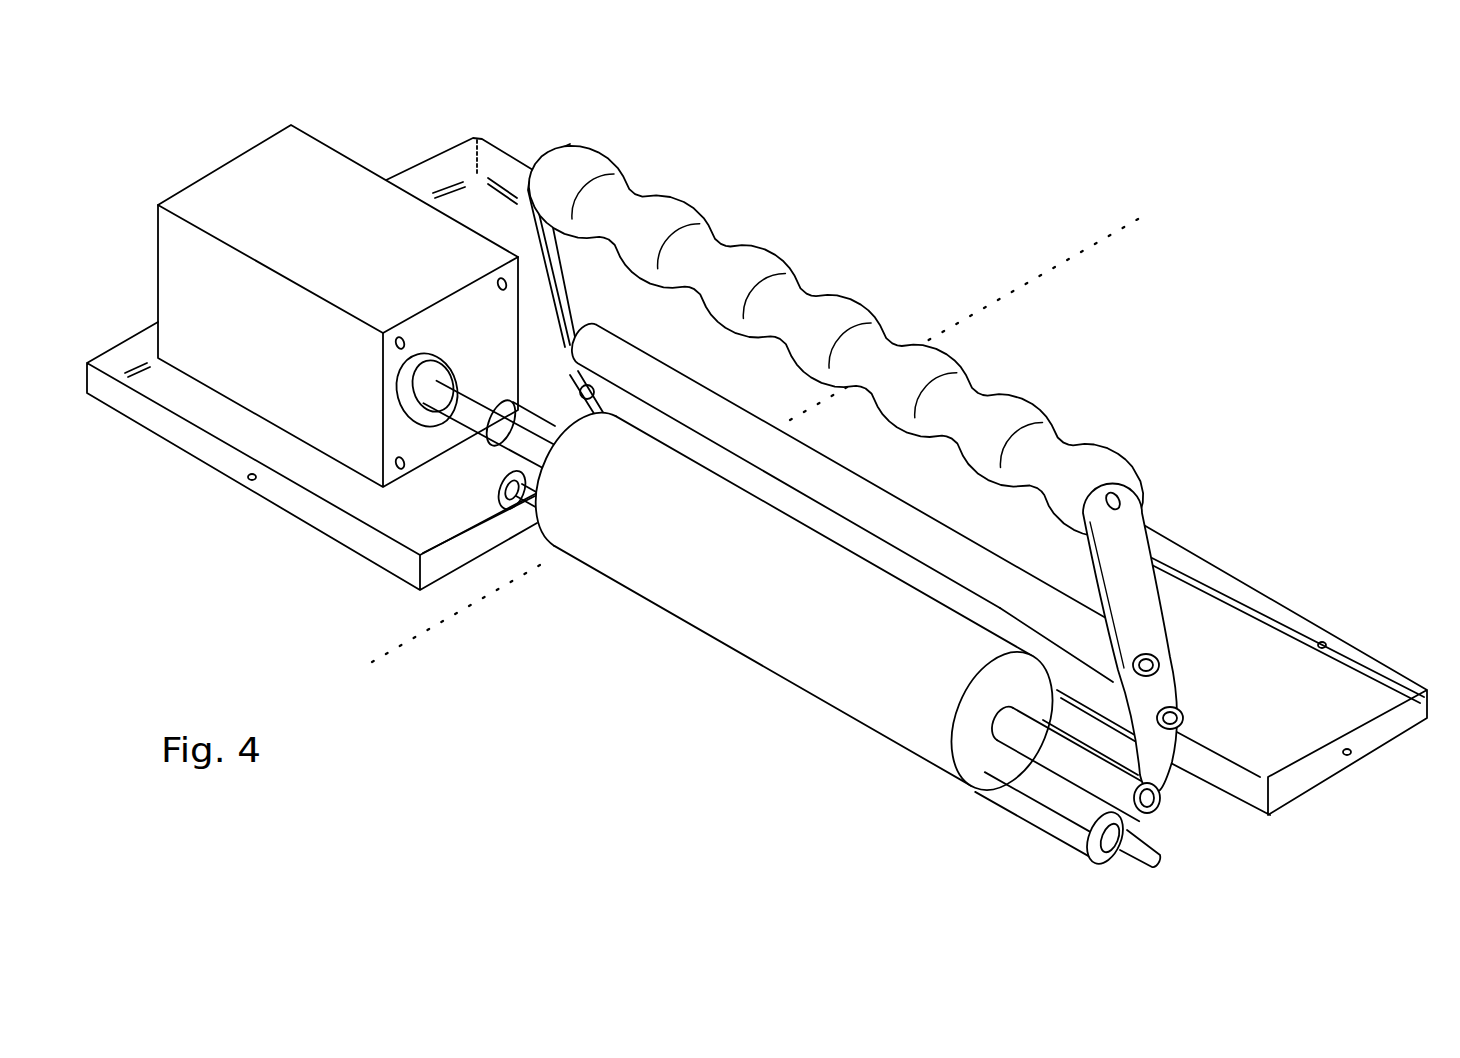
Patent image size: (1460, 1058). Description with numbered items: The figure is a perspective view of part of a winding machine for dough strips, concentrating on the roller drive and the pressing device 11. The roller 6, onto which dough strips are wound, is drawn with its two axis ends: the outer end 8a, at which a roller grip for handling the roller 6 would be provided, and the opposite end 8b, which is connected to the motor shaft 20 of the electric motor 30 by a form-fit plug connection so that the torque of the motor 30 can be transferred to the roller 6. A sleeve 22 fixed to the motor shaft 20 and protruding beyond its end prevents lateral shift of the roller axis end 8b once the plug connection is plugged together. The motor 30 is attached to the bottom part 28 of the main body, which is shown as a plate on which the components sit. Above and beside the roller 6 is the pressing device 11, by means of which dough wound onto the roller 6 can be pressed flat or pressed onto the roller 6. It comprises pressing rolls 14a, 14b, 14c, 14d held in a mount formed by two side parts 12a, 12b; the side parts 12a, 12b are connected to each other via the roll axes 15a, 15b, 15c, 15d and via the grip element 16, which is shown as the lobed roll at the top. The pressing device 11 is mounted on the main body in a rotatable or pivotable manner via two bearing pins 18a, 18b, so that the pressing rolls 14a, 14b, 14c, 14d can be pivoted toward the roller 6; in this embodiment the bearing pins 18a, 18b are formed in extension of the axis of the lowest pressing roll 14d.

The roller 6 is at (715, 607).
The outer end of the roller axis 8a is at (1027, 737).
The end of the roller axis 8b is at (530, 443).
The pressing device 11 is at (1207, 468).
The side part 12a is at (1122, 490).
The side part 12b is at (570, 280).
The pressing roll 14a is at (677, 392).
The pressing roll 14b is at (935, 585).
The pressing roll 14c is at (1108, 758).
The lowest pressing roll 14d is at (1030, 793).
The roll axis 15a is at (1160, 665).
The roll axis 15b is at (1184, 720).
The roll axis 15c is at (1162, 804).
The roll axis 15d is at (1096, 833).
The grip element 16 is at (912, 377).
The bearing pin 18a is at (1155, 853).
The bearing pin 18b is at (523, 507).
The motor shaft 20 is at (450, 403).
The sleeve 22 is at (515, 425).
The bottom part 28 is at (1355, 718).
The motor 30 is at (330, 188).